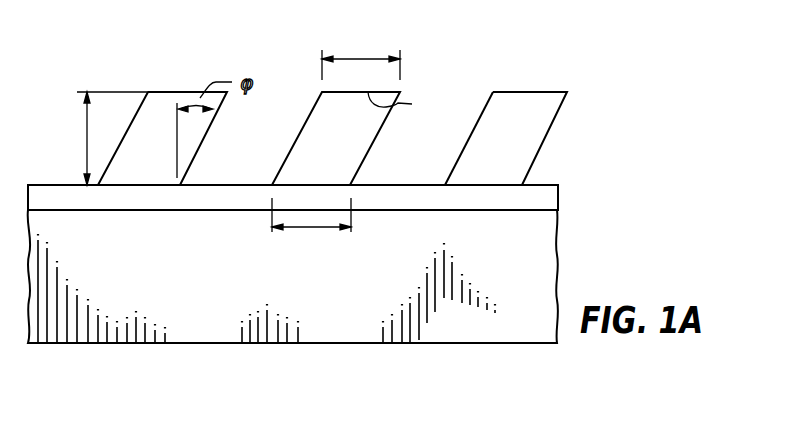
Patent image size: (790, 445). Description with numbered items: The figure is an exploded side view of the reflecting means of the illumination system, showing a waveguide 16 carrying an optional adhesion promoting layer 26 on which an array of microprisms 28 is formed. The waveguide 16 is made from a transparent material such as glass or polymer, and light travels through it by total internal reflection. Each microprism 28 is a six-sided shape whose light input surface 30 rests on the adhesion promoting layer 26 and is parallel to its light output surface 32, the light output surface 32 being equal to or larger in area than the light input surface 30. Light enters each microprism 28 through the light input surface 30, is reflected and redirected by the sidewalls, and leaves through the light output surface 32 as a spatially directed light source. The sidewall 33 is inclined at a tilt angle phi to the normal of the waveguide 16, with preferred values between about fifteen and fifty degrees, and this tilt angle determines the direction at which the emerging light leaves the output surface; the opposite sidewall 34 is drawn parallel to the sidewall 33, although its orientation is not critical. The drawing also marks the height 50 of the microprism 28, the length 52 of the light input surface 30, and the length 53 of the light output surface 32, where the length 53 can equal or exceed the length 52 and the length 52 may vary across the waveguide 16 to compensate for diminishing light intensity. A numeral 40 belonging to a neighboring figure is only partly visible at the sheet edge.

The waveguide 16 is at (557, 240).
The adhesion promoting layer 26 is at (558, 197).
The microprism 28 is at (358, 97).
The light input surface 30 is at (327, 185).
The light output surface 32 is at (404, 107).
The sidewall 33 is at (559, 108).
The sidewall 34 is at (470, 137).
The height 50 is at (85, 126).
The length 52 is at (319, 230).
The length 53 is at (368, 58).
The element of adjacent figure (partially visible) 40 is at (149, 437).